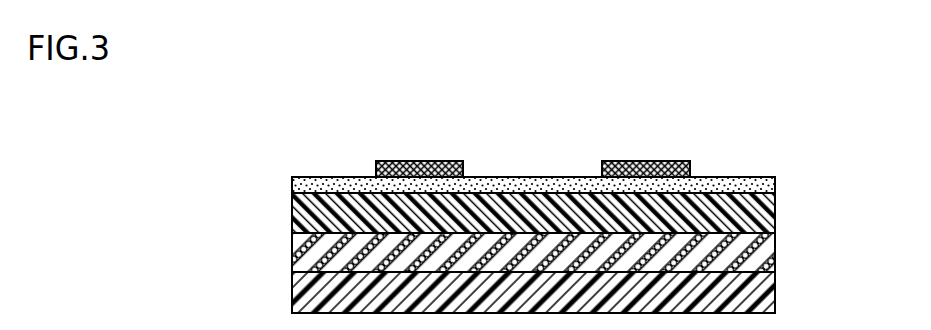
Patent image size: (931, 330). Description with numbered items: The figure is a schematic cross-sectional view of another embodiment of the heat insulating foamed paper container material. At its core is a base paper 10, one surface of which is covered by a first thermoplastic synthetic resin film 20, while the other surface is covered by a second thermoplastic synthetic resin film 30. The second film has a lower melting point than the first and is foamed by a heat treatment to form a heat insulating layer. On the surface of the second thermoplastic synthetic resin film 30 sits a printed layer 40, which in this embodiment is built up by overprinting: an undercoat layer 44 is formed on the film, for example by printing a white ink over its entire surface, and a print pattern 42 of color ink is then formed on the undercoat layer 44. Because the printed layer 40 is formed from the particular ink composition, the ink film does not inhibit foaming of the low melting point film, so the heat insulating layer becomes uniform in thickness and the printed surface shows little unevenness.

The base paper 10 is at (775, 253).
The first thermoplastic synthetic resin film 20 is at (775, 296).
The second thermoplastic synthetic resin film 30 is at (775, 207).
The printed layer 40 is at (546, 141).
The print pattern 42 is at (431, 161).
The undercoat layer 44 is at (711, 177).